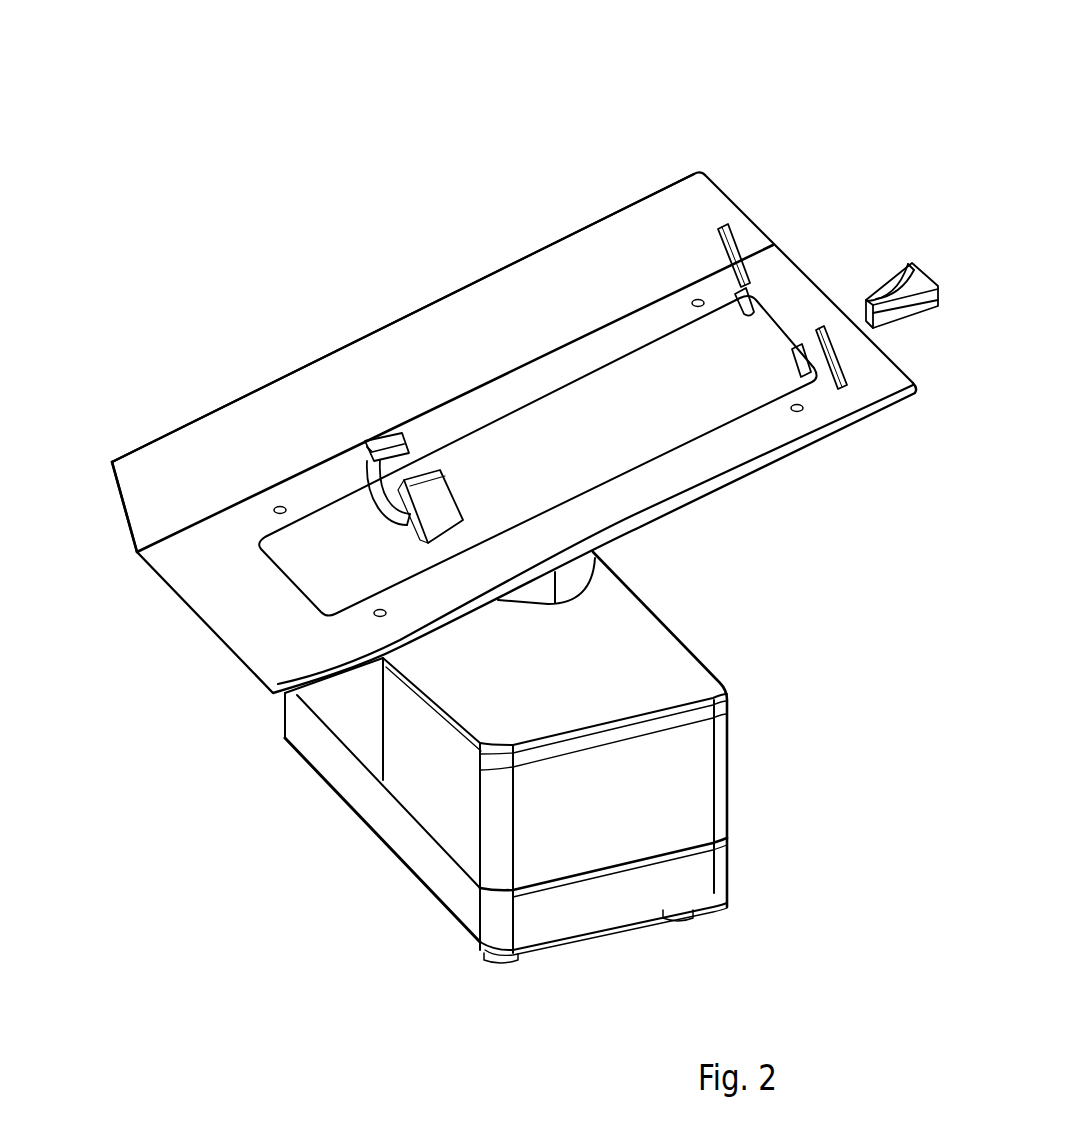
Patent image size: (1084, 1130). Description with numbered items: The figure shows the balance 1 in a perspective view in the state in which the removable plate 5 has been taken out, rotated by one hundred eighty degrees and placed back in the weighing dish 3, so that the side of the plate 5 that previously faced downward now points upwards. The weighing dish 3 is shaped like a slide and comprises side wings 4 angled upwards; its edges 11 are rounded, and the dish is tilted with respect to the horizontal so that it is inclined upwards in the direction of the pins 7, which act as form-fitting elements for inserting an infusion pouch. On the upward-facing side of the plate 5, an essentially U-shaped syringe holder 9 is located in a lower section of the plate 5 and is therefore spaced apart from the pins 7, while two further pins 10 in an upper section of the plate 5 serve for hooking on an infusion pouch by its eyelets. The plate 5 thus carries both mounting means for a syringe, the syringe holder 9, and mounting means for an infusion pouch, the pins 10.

The balance 1 is at (302, 820).
The weighing dish 3 is at (223, 562).
The side wings 4 is at (470, 303).
The plate 5 is at (600, 420).
The pins 7 is at (730, 227).
The syringe holder 9 is at (397, 437).
The pins 10 is at (752, 308).
The edges 11 is at (110, 457).